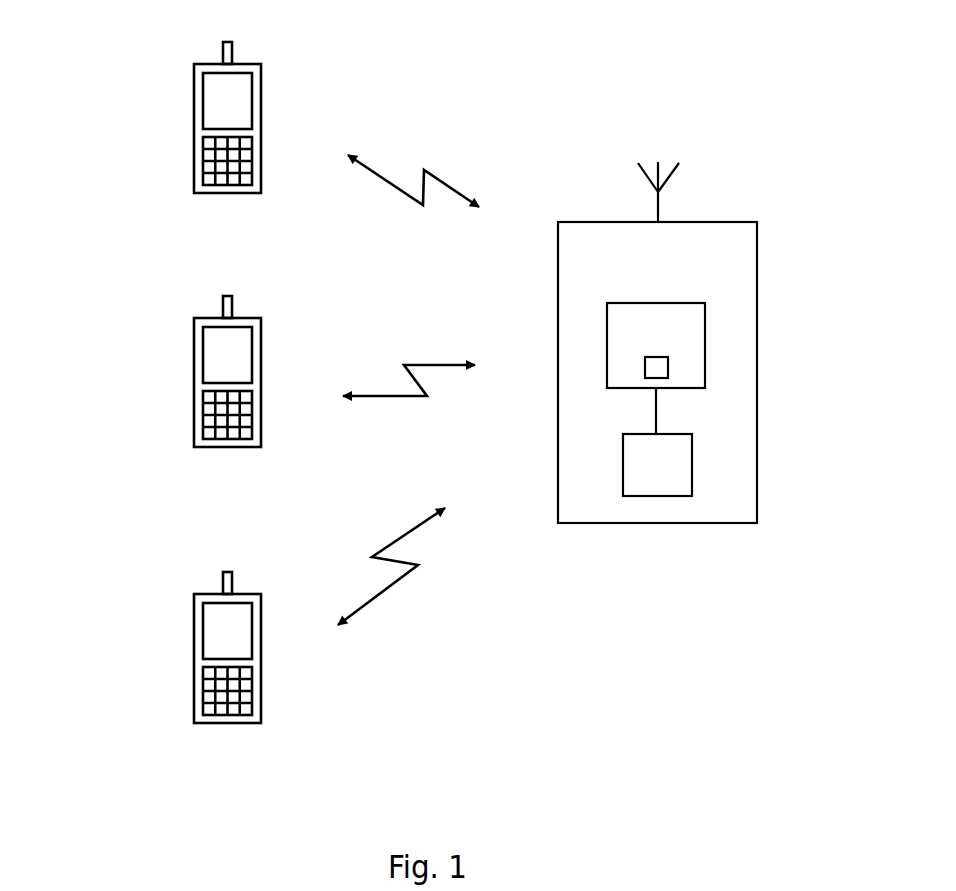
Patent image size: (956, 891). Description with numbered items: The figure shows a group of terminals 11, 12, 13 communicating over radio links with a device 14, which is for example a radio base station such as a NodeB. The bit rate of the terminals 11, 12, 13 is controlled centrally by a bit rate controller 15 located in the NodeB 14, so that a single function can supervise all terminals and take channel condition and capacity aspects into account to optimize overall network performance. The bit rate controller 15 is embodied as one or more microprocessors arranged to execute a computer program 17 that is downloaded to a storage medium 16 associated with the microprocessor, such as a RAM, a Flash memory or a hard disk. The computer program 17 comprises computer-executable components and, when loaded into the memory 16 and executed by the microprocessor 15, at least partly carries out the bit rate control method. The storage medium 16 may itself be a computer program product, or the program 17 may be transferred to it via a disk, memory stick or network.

The terminal 11 is at (180, 72).
The terminal 12 is at (180, 323).
The terminal 13 is at (180, 601).
The device 14 is at (722, 222).
The bit rate controller 15 is at (640, 465).
The storage medium 16 is at (687, 328).
The computer program 17 is at (655, 370).